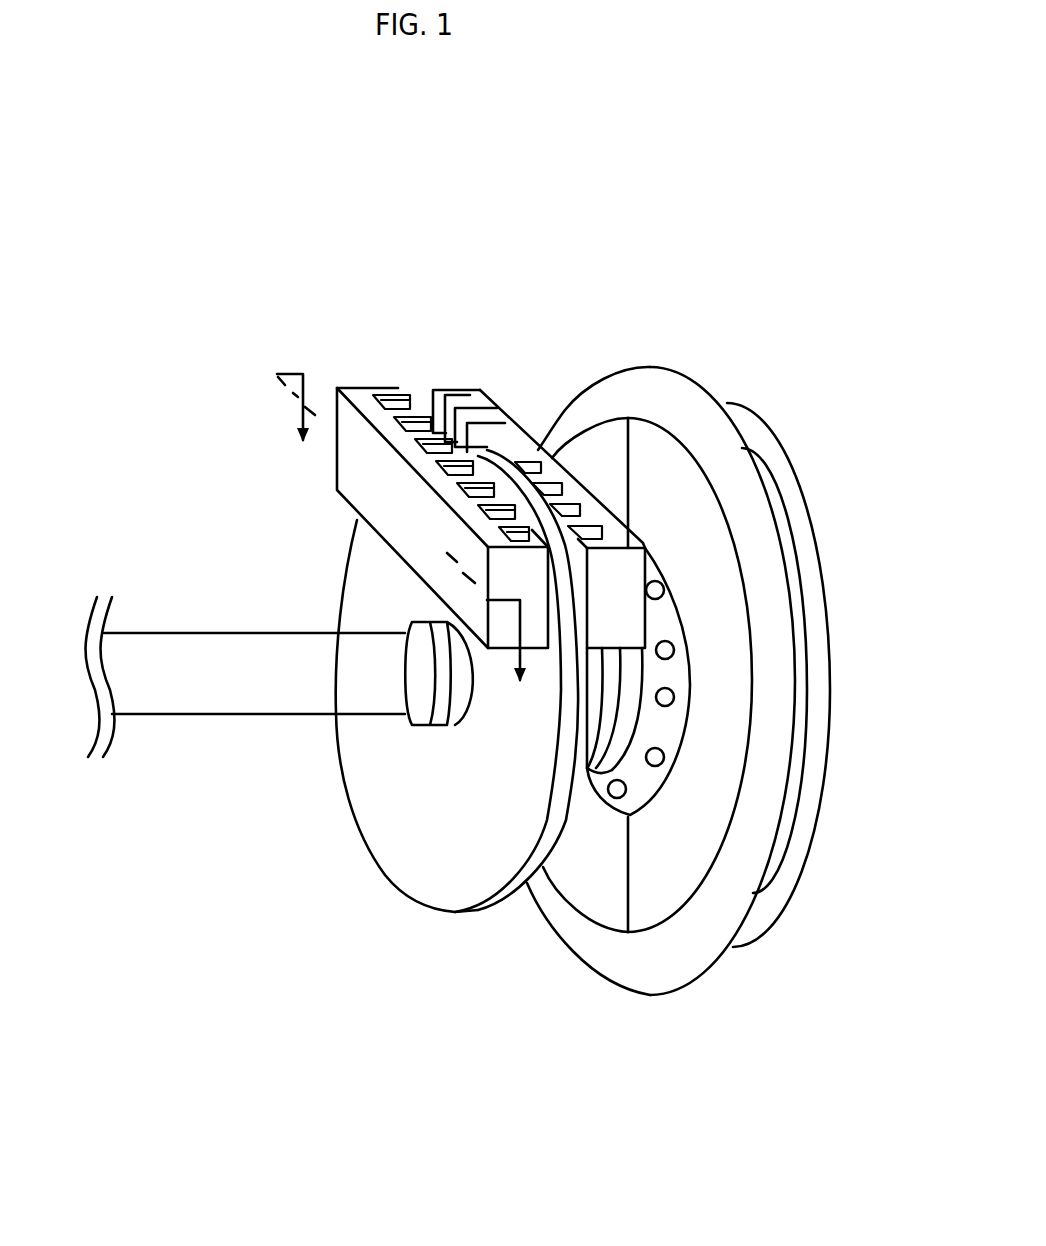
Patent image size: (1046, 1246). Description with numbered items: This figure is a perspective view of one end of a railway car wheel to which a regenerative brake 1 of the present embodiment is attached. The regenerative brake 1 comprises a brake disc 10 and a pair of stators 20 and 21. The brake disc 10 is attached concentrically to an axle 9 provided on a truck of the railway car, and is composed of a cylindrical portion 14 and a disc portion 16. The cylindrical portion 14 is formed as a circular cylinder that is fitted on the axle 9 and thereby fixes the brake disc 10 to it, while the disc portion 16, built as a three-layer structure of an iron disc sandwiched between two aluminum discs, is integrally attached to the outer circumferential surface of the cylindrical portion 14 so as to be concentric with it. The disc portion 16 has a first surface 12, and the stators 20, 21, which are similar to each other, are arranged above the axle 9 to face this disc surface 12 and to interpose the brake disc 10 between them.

The regenerative brake 1 is at (655, 228).
The axle 9 is at (218, 633).
The brake disc 10 is at (460, 773).
The first surface 12 is at (395, 855).
The cylindrical portion 14 is at (448, 727).
The disc portion 16 is at (465, 912).
The stator 20 is at (365, 388).
The stator 21 is at (487, 388).